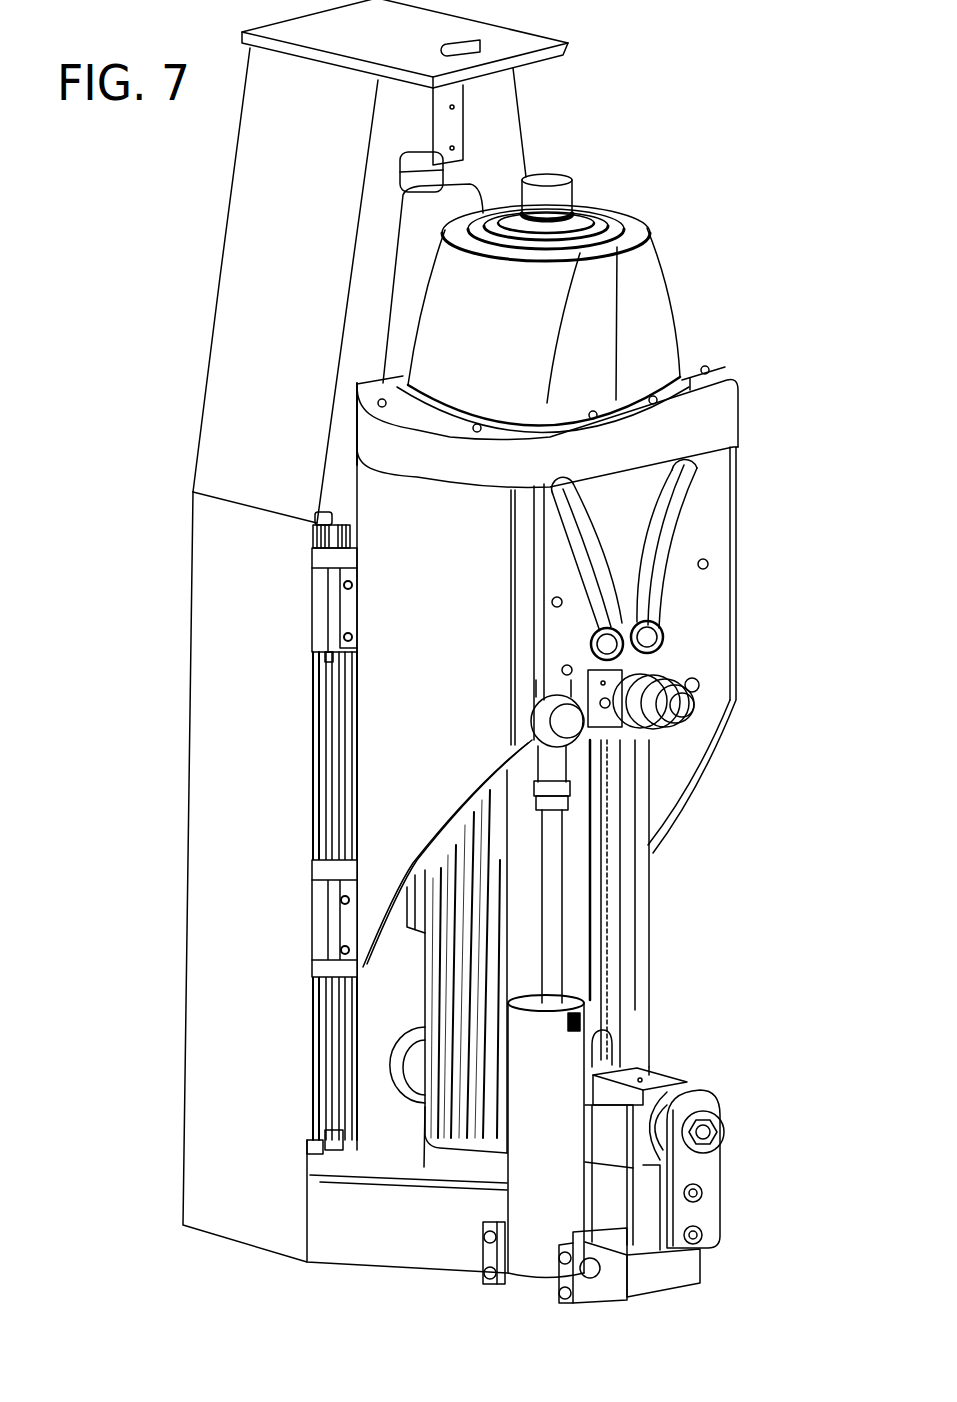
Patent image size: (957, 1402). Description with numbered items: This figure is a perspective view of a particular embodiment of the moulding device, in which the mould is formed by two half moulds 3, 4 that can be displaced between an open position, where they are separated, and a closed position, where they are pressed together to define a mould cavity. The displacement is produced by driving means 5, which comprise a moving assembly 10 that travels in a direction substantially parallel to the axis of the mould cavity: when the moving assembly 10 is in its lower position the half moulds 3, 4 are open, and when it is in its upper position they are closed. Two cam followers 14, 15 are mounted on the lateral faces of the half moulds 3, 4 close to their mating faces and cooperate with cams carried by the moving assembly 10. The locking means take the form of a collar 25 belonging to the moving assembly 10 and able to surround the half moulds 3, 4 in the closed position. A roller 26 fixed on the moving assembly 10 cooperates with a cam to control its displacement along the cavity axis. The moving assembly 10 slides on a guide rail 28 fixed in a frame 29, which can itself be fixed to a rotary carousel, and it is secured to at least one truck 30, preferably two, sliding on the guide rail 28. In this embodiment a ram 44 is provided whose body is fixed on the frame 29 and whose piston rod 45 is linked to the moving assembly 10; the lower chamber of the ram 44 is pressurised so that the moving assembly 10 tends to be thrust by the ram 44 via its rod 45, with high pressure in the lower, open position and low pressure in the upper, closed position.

The half mould 3 is at (447, 370).
The half mould 4 is at (637, 280).
The collar 25 is at (713, 385).
The moving assembly 10 is at (390, 530).
The driving means 5 is at (452, 713).
The cam follower 15 is at (614, 641).
The cam follower 14 is at (659, 638).
The roller 26 is at (683, 707).
The frame 29 is at (250, 797).
The guide rail 28 is at (310, 843).
The truck 30 is at (313, 947).
The piston rod 45 is at (550, 887).
The ram 44 is at (533, 1267).